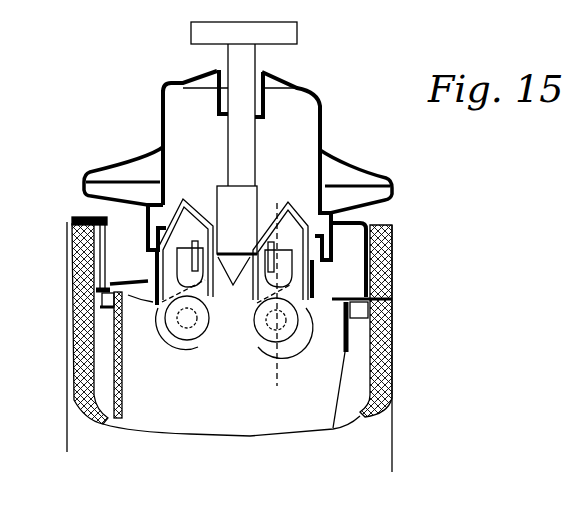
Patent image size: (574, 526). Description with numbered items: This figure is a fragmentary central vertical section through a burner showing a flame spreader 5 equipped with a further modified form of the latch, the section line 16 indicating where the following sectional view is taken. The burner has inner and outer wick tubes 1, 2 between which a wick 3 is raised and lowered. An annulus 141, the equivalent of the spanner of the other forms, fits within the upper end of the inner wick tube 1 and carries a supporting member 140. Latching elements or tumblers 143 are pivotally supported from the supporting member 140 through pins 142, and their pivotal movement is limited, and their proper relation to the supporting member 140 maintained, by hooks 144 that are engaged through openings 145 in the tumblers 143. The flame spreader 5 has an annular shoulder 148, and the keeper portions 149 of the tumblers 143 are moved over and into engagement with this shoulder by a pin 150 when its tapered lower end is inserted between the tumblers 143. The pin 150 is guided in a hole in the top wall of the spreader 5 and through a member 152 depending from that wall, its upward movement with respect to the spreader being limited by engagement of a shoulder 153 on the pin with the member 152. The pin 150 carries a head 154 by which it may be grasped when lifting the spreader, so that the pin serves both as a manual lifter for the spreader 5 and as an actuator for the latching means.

The inner wick tube 1 is at (367, 378).
The outer wick tube 2 is at (393, 329).
The wick 3 is at (72, 286).
The flame spreader 5 is at (331, 152).
The section line 16 is at (292, 195).
The supporting member 140 is at (148, 365).
The annulus 141 is at (392, 298).
The pins 142 is at (265, 333).
The tumblers 143 is at (184, 222).
The hooks 144 is at (190, 244).
The openings 145 is at (168, 300).
The annular shoulder 148 is at (320, 263).
The keeper portions 149 is at (146, 238).
The pin 150 is at (247, 152).
The member 152 is at (263, 116).
The shoulder 153 is at (227, 168).
The head 154 is at (292, 27).